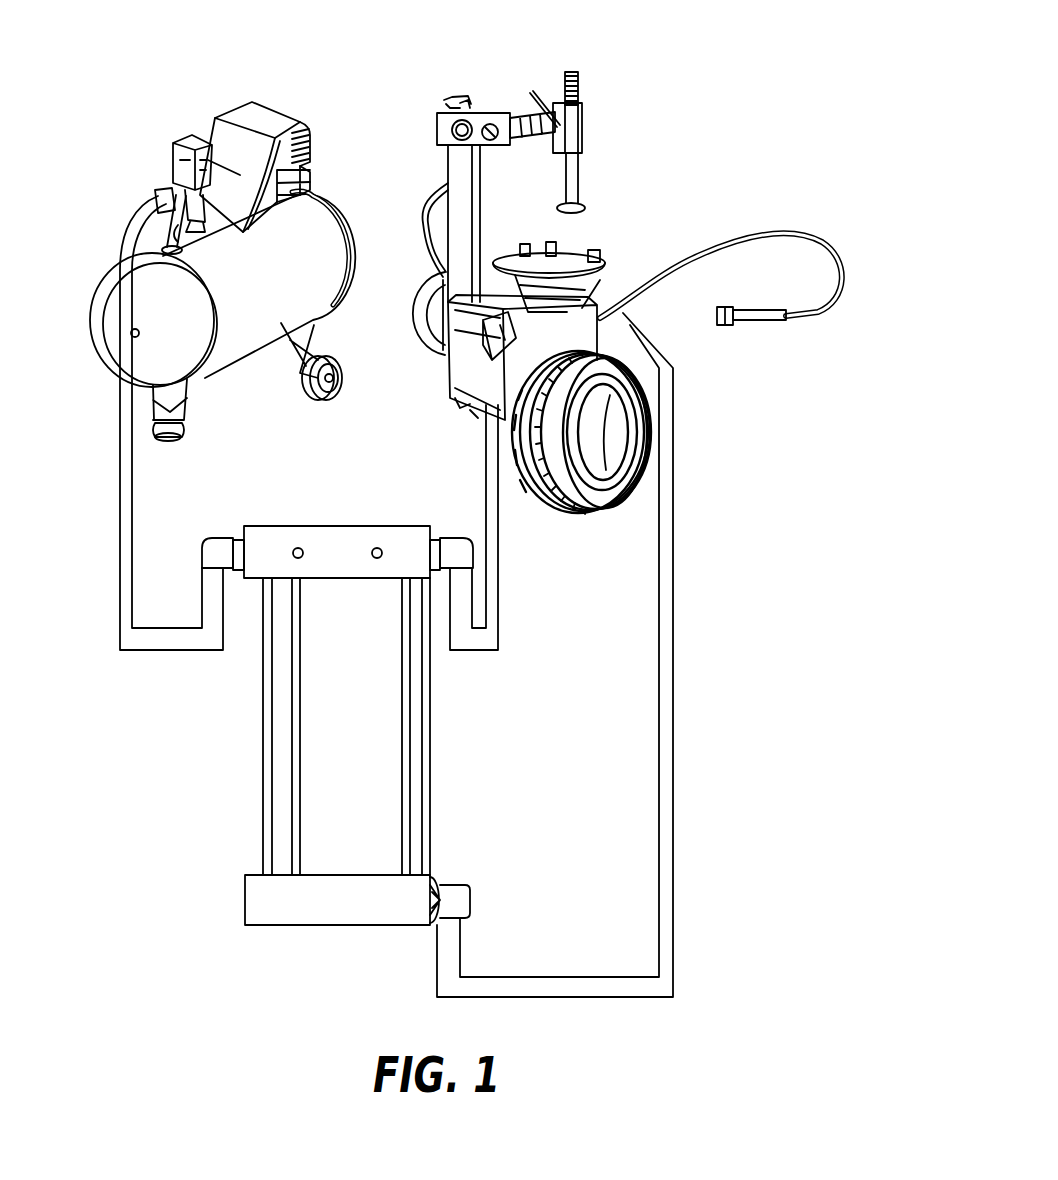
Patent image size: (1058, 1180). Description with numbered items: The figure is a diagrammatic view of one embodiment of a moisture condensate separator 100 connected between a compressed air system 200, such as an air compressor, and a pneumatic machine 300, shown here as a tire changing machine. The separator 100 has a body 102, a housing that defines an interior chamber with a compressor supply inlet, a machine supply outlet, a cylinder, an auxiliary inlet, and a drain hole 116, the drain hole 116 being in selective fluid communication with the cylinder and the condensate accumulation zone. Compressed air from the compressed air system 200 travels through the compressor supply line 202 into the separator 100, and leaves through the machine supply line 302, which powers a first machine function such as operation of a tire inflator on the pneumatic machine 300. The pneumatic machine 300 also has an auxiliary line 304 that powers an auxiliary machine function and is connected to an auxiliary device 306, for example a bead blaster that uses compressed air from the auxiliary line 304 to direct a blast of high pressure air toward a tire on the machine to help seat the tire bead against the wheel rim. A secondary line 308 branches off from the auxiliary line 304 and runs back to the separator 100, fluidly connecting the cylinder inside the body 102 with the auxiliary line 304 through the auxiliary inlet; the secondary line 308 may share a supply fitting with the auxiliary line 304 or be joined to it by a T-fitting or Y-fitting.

The moisture condensate separator 100 is at (275, 762).
The body 102 is at (263, 718).
The drain hole 116 is at (279, 921).
The compressed air system 200 is at (91, 238).
The compressor supply line 202 is at (118, 497).
The pneumatic machine 300 is at (696, 92).
The machine supply line 302 is at (482, 453).
The auxiliary line 304 is at (848, 265).
The auxiliary device 306 is at (755, 322).
The secondary line 308 is at (673, 689).